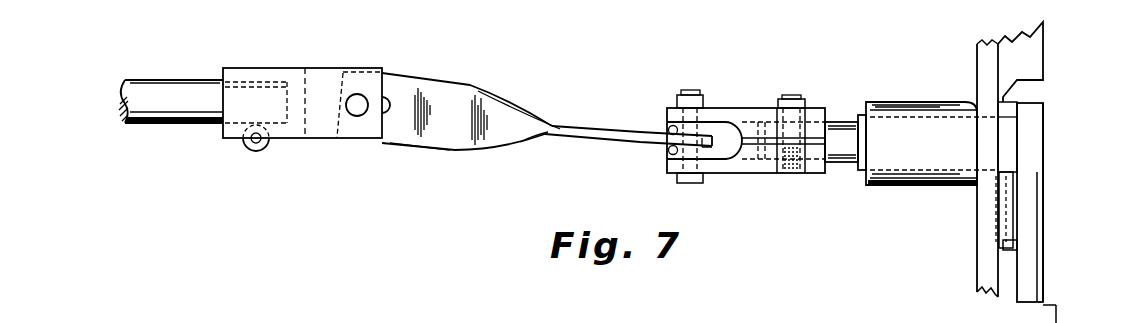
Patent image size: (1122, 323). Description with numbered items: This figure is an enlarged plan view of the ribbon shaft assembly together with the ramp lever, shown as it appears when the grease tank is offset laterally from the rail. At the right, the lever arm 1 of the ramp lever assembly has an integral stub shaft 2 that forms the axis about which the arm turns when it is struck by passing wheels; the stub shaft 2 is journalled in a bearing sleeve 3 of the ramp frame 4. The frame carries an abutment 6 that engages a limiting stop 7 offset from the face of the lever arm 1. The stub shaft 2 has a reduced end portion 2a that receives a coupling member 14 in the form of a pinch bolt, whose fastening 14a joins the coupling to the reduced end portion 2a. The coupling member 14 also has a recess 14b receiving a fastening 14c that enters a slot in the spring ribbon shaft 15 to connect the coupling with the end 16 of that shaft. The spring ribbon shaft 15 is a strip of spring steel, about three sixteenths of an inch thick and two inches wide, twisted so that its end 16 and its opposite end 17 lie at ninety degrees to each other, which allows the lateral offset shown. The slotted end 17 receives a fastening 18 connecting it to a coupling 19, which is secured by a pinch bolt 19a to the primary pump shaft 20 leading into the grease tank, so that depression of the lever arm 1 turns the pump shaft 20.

The lever arm 1 is at (1031, 270).
The stub shaft 2 is at (914, 168).
The reduced end portion 2a is at (847, 122).
The bearing sleeve 3 is at (871, 100).
The ramp frame 4 is at (975, 58).
The abutment 6 is at (1007, 210).
The limiting stop 7 is at (998, 248).
The coupling member 14 is at (754, 108).
The fastening 14a is at (794, 95).
The recess 14b is at (727, 160).
The fastening 14c is at (677, 185).
The spring ribbon shaft 15 is at (462, 81).
The end 16 is at (634, 143).
The end 17 is at (405, 146).
The fastening 18 is at (358, 97).
The coupling 19 is at (313, 68).
The pinch bolt 19a is at (257, 146).
The primary pump shaft 20 is at (158, 80).